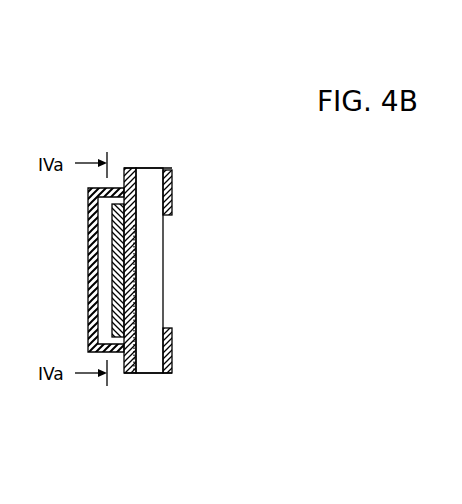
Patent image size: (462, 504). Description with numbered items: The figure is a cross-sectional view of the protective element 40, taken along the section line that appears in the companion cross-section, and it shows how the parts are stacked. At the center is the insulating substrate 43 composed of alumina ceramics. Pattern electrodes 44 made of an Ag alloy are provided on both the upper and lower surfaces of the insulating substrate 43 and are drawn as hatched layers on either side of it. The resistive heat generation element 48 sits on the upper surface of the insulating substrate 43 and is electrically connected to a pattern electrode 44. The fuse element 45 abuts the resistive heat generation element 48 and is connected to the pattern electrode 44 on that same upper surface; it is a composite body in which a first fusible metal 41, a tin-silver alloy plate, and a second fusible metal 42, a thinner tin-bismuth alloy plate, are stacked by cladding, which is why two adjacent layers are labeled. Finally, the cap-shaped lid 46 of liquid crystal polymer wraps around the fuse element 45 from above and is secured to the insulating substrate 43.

The protective element 40 is at (85, 124).
The first fusible metal 41 is at (112, 358).
The second fusible metal 42 is at (121, 366).
The insulating substrate 43 is at (149, 180).
The pattern electrode 44 is at (128, 167).
The fuse element 45 is at (152, 463).
The cap-shaped lid 46 is at (88, 237).
The resistive heat generation element 48 is at (137, 225).